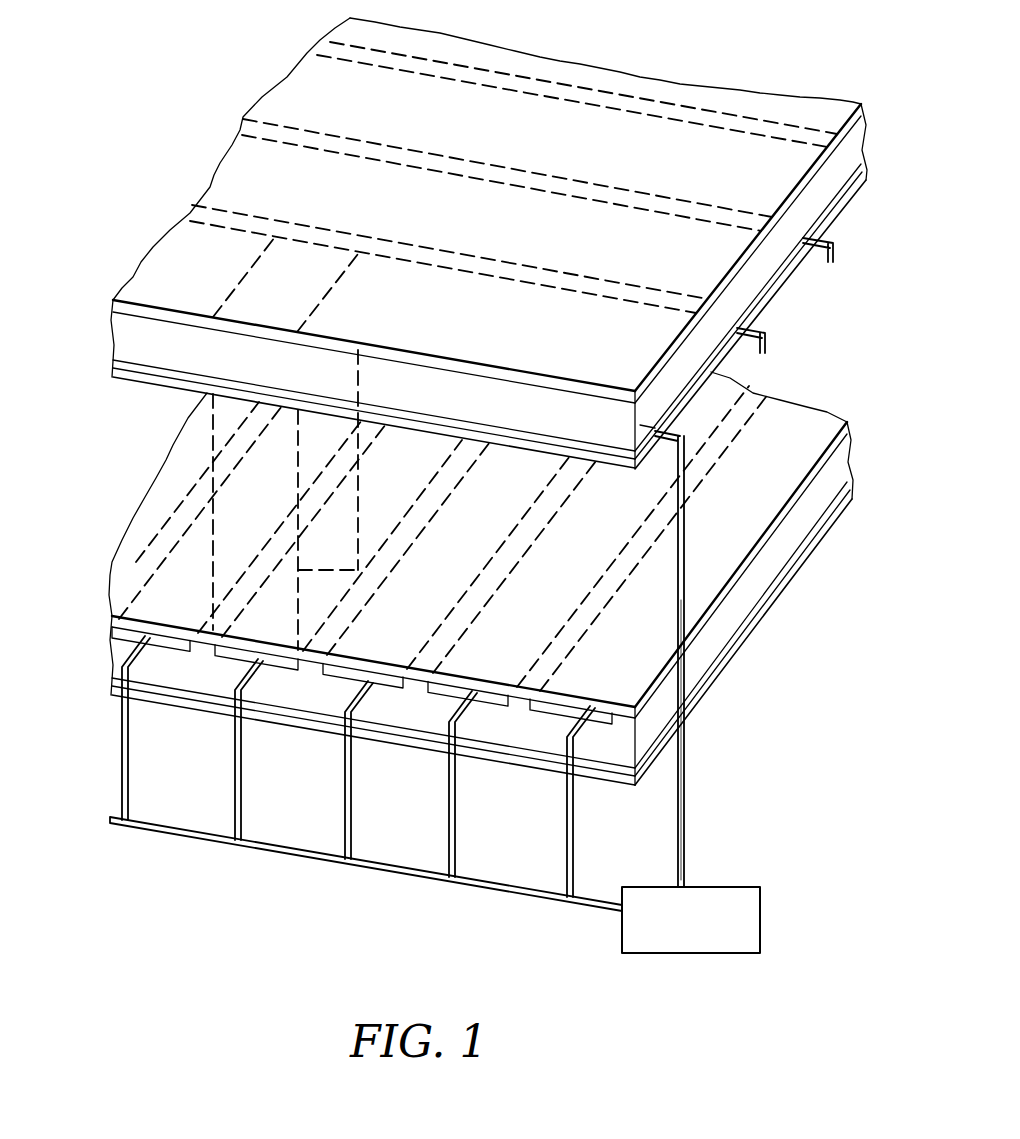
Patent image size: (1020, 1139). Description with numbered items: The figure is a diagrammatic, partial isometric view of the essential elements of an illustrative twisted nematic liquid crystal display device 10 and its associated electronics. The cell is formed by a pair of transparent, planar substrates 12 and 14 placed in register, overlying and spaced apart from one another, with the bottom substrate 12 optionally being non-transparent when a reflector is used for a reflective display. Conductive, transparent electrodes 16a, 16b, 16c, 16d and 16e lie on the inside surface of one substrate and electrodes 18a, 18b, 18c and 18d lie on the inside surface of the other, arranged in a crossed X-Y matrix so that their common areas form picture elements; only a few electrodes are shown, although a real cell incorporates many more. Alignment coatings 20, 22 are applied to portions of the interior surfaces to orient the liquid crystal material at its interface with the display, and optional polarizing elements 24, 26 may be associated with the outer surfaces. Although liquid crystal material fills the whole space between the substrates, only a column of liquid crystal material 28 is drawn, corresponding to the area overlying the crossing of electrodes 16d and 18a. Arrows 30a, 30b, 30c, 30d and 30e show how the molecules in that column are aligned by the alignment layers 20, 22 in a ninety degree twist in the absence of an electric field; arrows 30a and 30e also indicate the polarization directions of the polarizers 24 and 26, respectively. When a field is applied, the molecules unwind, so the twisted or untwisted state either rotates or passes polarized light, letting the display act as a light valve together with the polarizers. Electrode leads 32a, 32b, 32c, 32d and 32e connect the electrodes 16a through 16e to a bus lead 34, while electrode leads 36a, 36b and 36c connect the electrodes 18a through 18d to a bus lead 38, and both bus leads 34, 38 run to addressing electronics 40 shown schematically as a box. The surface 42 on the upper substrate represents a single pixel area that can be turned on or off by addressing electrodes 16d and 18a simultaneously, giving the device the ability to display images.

The twisted nematic display device 10 is at (205, 113).
The substrate 12 is at (112, 668).
The substrate 14 is at (113, 332).
The electrode 16a is at (612, 725).
The electrode 16b is at (497, 710).
The electrode 16c is at (393, 690).
The electrode 16d is at (270, 662).
The electrode 16e is at (114, 631).
The electrode 18a is at (645, 449).
The electrode 18b is at (762, 316).
The electrode 18c is at (838, 233).
The electrode 18d is at (866, 158).
The alignment coating 20 is at (112, 616).
The alignment coating 22 is at (140, 380).
The polarizing element 24 is at (112, 695).
The polarizing element 26 is at (113, 300).
The liquid crystal material 28 is at (205, 552).
The arrow 30a is at (283, 608).
The arrow 30b is at (294, 553).
The arrow 30c is at (294, 490).
The arrow 30d is at (292, 425).
The arrow 30e is at (307, 348).
The electrode lead 32a is at (574, 837).
The electrode lead 32b is at (455, 832).
The electrode lead 32c is at (352, 816).
The electrode lead 32d is at (241, 800).
The electrode lead 32e is at (128, 786).
The bus lead 34 is at (388, 868).
The electrode lead 36a is at (667, 440).
The electrode lead 36b is at (757, 340).
The electrode lead 36c is at (820, 266).
The bus lead 38 is at (686, 802).
The addressing electronics 40 is at (758, 894).
The surface 42 is at (284, 298).